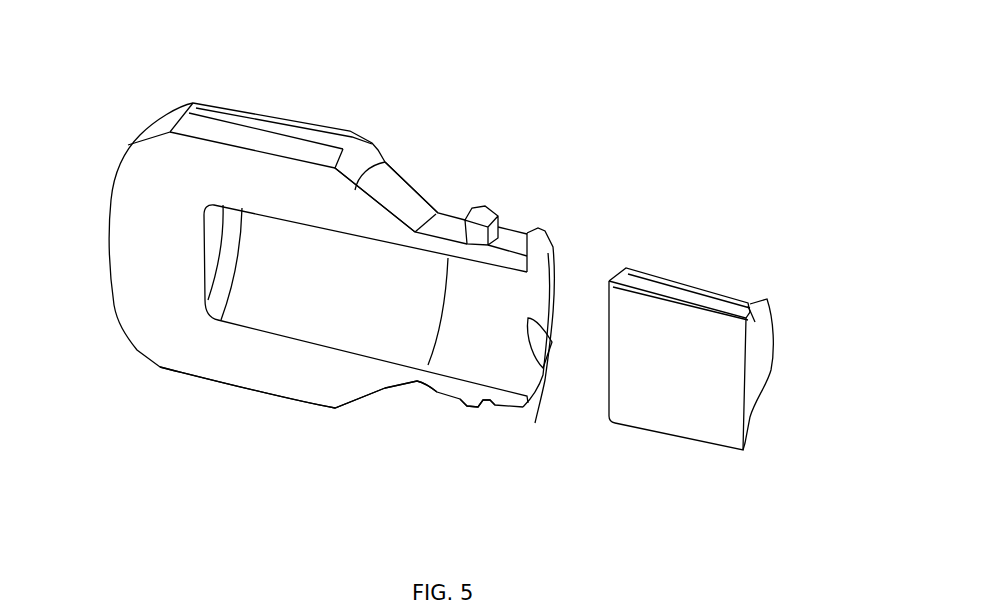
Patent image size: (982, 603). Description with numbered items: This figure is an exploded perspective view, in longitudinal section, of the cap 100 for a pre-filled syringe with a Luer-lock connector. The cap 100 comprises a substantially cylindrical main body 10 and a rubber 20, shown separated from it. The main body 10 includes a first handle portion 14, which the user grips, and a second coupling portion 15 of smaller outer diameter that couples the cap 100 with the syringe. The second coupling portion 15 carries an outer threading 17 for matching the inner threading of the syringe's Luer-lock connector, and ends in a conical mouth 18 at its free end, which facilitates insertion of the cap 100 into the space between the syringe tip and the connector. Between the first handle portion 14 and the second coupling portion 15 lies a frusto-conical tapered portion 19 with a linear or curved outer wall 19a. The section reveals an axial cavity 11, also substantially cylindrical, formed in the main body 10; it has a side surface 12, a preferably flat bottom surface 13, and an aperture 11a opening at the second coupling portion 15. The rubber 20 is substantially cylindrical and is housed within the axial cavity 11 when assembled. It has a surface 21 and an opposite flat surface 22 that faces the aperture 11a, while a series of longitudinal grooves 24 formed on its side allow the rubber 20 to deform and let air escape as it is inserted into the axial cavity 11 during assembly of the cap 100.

The cap 100 is at (486, 114).
The main body 10 is at (450, 203).
The axial cavity 11 is at (373, 305).
The aperture 11a is at (535, 423).
The side surface 12 is at (282, 334).
The bottom surface 13 is at (217, 233).
The first handle portion 14 is at (249, 114).
The second coupling portion 15 is at (438, 390).
The outer threading 17 is at (477, 397).
The conical mouth 18 is at (553, 247).
The tapered portion 19 is at (362, 368).
The outer wall 19a is at (400, 202).
The rubber 20 is at (678, 264).
The surface 21 is at (607, 347).
The surface 22 is at (752, 390).
The longitudinal grooves 24 is at (733, 300).